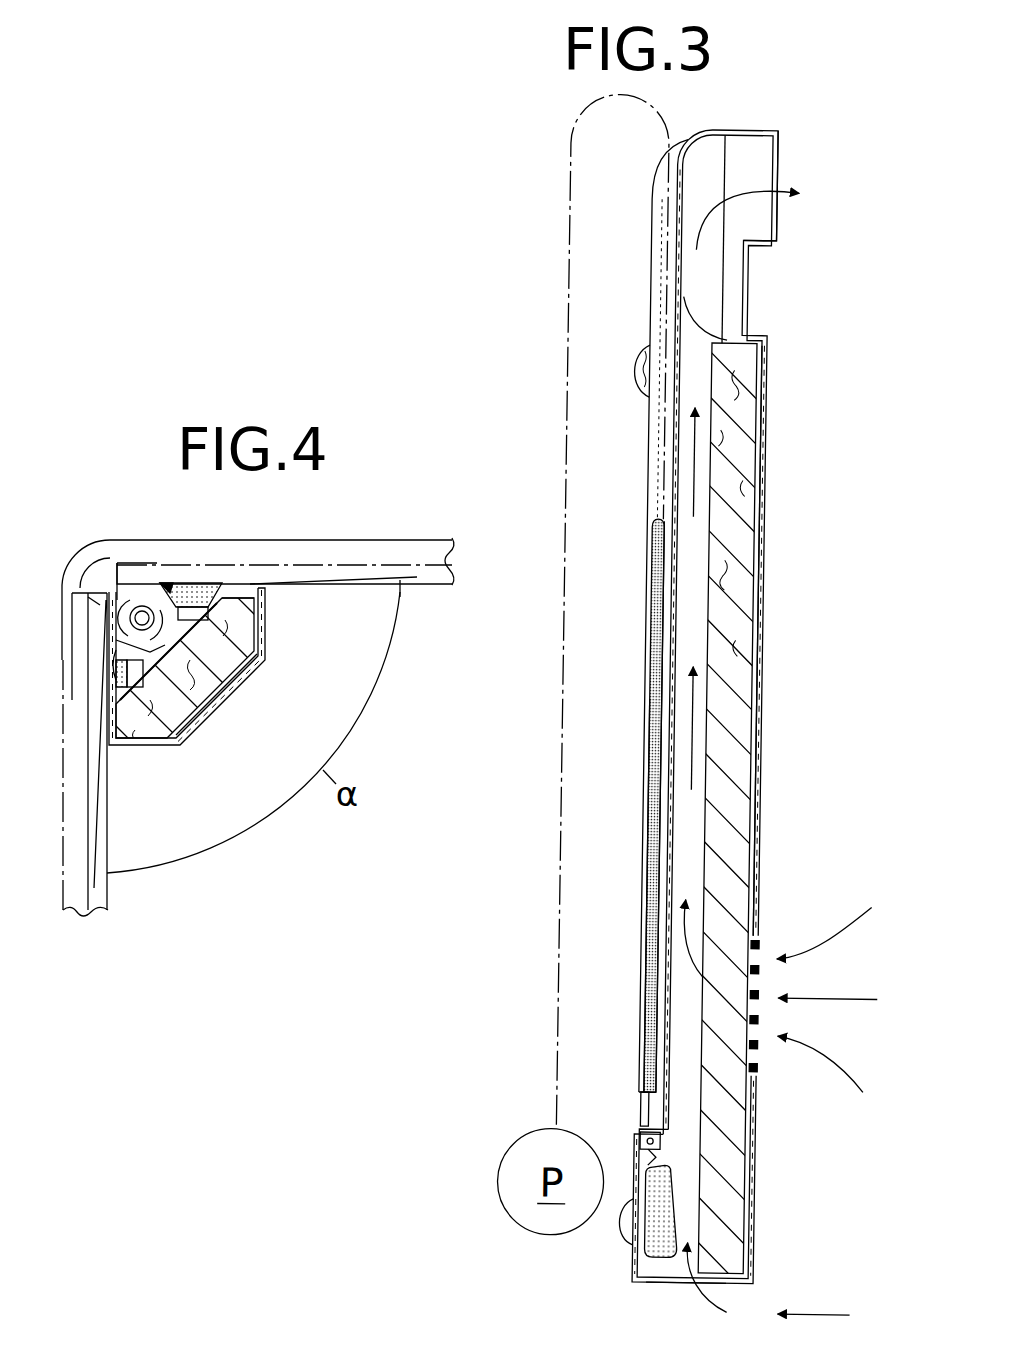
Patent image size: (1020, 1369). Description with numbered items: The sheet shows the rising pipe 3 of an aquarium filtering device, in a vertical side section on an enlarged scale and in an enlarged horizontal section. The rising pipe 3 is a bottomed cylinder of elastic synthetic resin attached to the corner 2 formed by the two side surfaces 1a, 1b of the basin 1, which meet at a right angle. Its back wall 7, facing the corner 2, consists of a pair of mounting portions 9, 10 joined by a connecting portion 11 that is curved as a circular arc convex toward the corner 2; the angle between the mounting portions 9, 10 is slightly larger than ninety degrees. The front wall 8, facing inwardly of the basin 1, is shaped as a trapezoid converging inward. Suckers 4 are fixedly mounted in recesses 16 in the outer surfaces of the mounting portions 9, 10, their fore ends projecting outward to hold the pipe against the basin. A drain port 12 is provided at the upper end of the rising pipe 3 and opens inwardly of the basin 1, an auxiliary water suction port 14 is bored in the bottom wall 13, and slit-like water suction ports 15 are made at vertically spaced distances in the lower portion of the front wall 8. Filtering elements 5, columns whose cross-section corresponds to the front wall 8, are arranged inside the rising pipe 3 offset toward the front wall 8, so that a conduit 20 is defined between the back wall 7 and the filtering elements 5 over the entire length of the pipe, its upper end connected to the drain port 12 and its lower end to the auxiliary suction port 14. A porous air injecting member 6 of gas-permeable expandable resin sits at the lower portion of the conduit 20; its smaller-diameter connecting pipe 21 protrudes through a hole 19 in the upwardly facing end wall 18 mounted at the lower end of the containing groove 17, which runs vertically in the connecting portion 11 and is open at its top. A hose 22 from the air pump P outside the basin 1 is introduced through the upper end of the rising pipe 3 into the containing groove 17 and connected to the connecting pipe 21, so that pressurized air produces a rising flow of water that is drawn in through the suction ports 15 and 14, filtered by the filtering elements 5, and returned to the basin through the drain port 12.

In FIG. 3, the basin 1 is at (612, 610).
In FIG. 4, the basin 1 is at (397, 540).
In FIG. 4, the side surface 1a is at (350, 575).
In FIG. 4, the side surface 1b is at (100, 845).
In FIG. 4, the corner 2 is at (132, 567).
In FIG. 3, the rising pipe 3 is at (775, 535).
In FIG. 4, the rising pipe 3 is at (147, 752).
In FIG. 3, the suckers 4 is at (637, 370).
In FIG. 4, the suckers 4 is at (120, 668).
In FIG. 3, the filtering elements 5 is at (750, 645).
In FIG. 4, the filtering elements 5 is at (250, 622).
In FIG. 3, the porous air injecting member 6 is at (685, 1222).
In FIG. 4, the back wall 7 is at (122, 630).
In FIG. 3, the front wall 8 is at (768, 718).
In FIG. 4, the front wall 8 is at (205, 703).
In FIG. 4, the mounting portion 9 is at (249, 600).
In FIG. 4, the mounting portion 10 is at (118, 712).
In FIG. 3, the connecting portion 11 is at (652, 490).
In FIG. 4, the connecting portion 11 is at (122, 618).
In FIG. 3, the drain port 12 is at (776, 226).
In FIG. 3, the bottom wall 13 is at (761, 1287).
In FIG. 3, the auxiliary water suction port 14 is at (689, 1277).
In FIG. 3, the slit-like water suction ports 15 is at (764, 933).
In FIG. 4, the recesses 16 is at (217, 583).
In FIG. 3, the containing groove 17 is at (671, 440).
In FIG. 4, the containing groove 17 is at (90, 597).
In FIG. 3, the end wall 18 is at (652, 1135).
In FIG. 3, the hole 19 is at (667, 1150).
In FIG. 3, the conduit 20 is at (693, 570).
In FIG. 4, the conduit 20 is at (225, 672).
In FIG. 3, the connecting pipe 21 is at (657, 1150).
In FIG. 3, the hose 22 is at (662, 783).